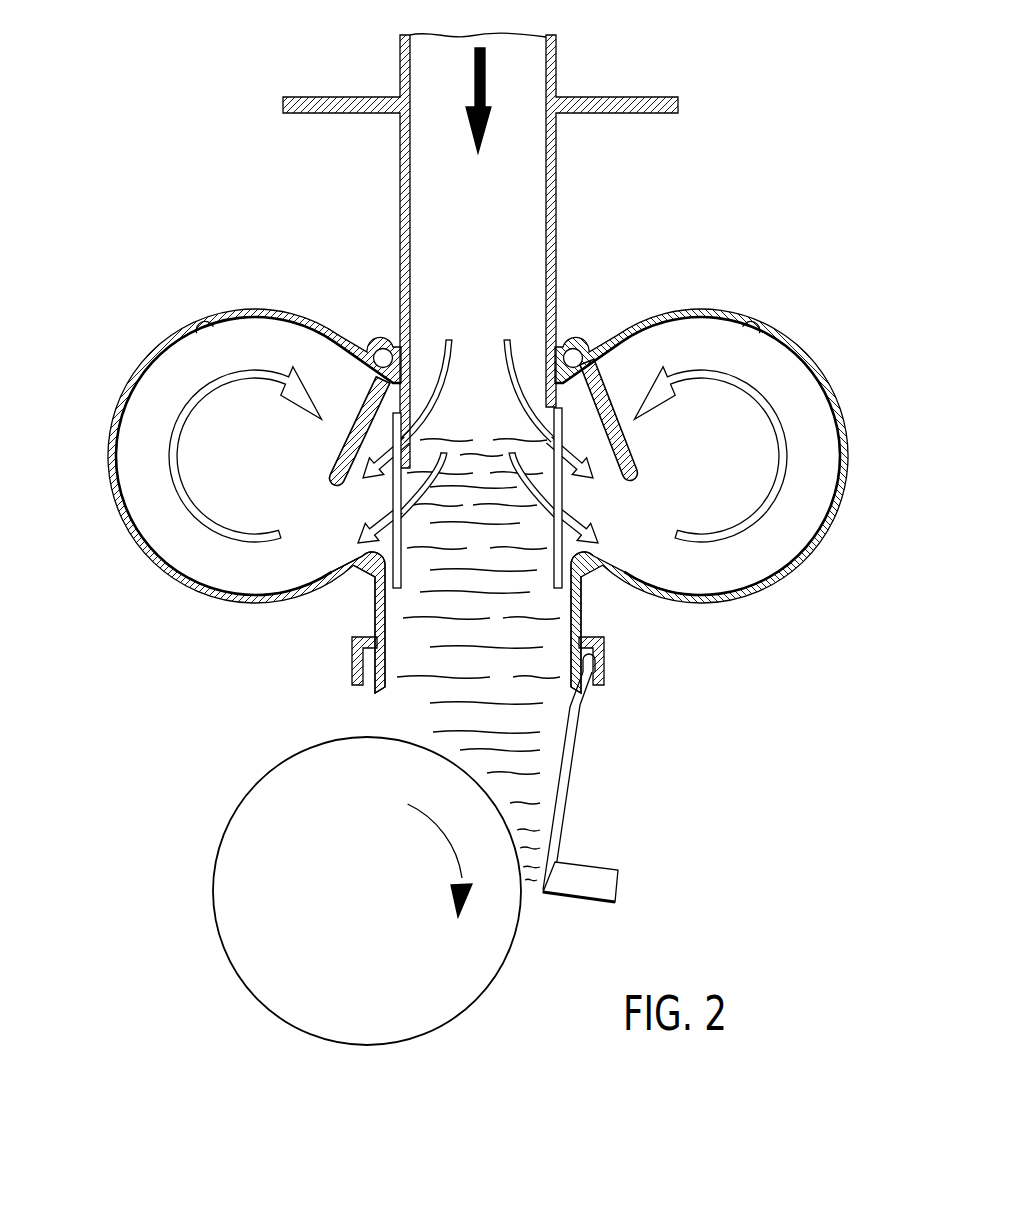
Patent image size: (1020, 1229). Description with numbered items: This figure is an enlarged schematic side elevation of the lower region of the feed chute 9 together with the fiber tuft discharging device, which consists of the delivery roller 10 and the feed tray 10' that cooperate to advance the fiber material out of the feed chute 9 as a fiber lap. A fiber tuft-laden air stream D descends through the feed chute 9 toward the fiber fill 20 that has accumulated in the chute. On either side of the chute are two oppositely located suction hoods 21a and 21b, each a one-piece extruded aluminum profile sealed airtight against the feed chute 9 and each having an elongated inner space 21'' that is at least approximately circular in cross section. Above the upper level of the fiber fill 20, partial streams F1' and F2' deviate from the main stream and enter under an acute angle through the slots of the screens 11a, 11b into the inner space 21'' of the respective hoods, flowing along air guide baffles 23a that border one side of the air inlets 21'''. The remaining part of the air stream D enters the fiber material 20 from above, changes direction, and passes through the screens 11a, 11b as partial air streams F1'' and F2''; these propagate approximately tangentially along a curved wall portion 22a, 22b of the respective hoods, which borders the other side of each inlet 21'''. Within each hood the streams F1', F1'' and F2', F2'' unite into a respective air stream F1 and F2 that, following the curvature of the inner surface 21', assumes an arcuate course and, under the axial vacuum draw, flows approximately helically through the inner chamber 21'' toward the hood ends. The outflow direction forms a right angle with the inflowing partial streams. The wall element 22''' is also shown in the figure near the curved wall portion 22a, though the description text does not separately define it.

The feed chute 9 is at (440, 53).
The fiber tuft-laden air stream D is at (483, 70).
The suction hood 21a is at (140, 363).
The suction hood 21b is at (790, 333).
The inner surface 21' is at (459, 302).
The inner space 21'' is at (479, 456).
The air inlet 21''' is at (651, 427).
The air guide baffle 23a is at (357, 427).
The curved wall portion 22a is at (360, 570).
The curved wall portion 22b is at (560, 578).
The connecting wall 22''' is at (280, 603).
The screen 11a is at (393, 588).
The screen 11b is at (590, 575).
The fiber fill 20 is at (540, 767).
The delivery roller 10 is at (338, 891).
The feed tray 10' is at (626, 787).
The air stream F1 is at (201, 464).
The air stream F2 is at (758, 454).
The partial stream F1' is at (408, 377).
The partial stream F2' is at (540, 356).
The partial air stream F1'' is at (420, 456).
The partial air stream F2'' is at (581, 498).